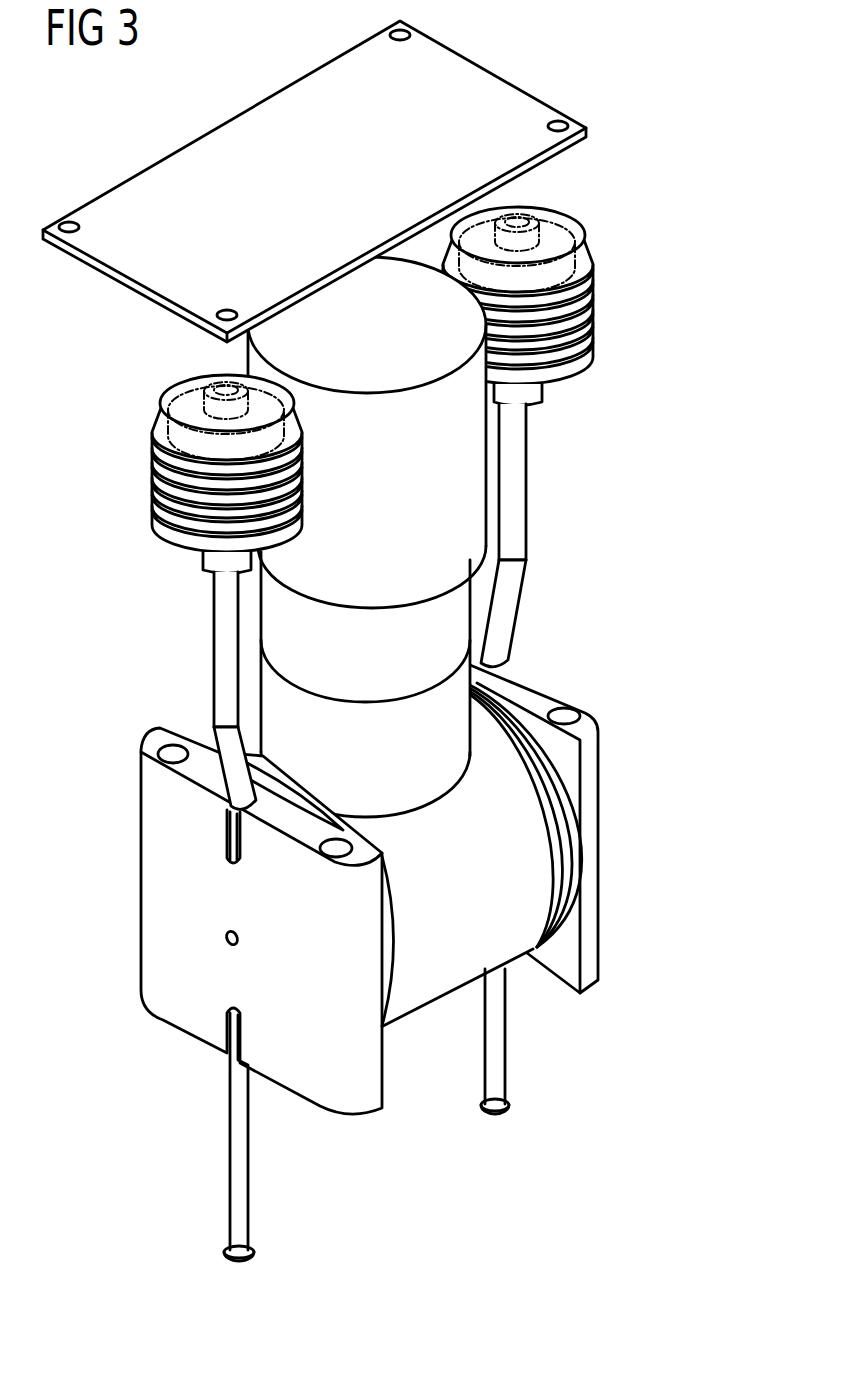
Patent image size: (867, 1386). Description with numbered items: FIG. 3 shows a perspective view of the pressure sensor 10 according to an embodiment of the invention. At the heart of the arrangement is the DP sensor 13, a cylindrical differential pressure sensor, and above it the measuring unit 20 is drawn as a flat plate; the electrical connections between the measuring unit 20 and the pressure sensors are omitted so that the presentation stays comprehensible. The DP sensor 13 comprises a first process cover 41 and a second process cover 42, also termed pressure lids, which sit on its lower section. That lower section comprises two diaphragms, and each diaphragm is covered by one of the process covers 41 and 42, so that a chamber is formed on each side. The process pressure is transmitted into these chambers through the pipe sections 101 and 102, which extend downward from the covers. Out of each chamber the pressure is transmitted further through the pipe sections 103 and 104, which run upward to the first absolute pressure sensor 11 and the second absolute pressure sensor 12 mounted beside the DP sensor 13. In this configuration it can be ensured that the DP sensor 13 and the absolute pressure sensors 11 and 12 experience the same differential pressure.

The pressure sensor 10 is at (405, 734).
The first absolute pressure sensor 11 is at (150, 484).
The second absolute pressure sensor 12 is at (592, 300).
The DP sensor 13 is at (455, 463).
The measuring unit 20 is at (497, 100).
The first process cover 41 is at (150, 903).
The second process cover 42 is at (590, 796).
The pipe section 101 is at (252, 1193).
The pipe section 102 is at (508, 1058).
The pipe section 103 is at (217, 624).
The pipe section 104 is at (510, 611).